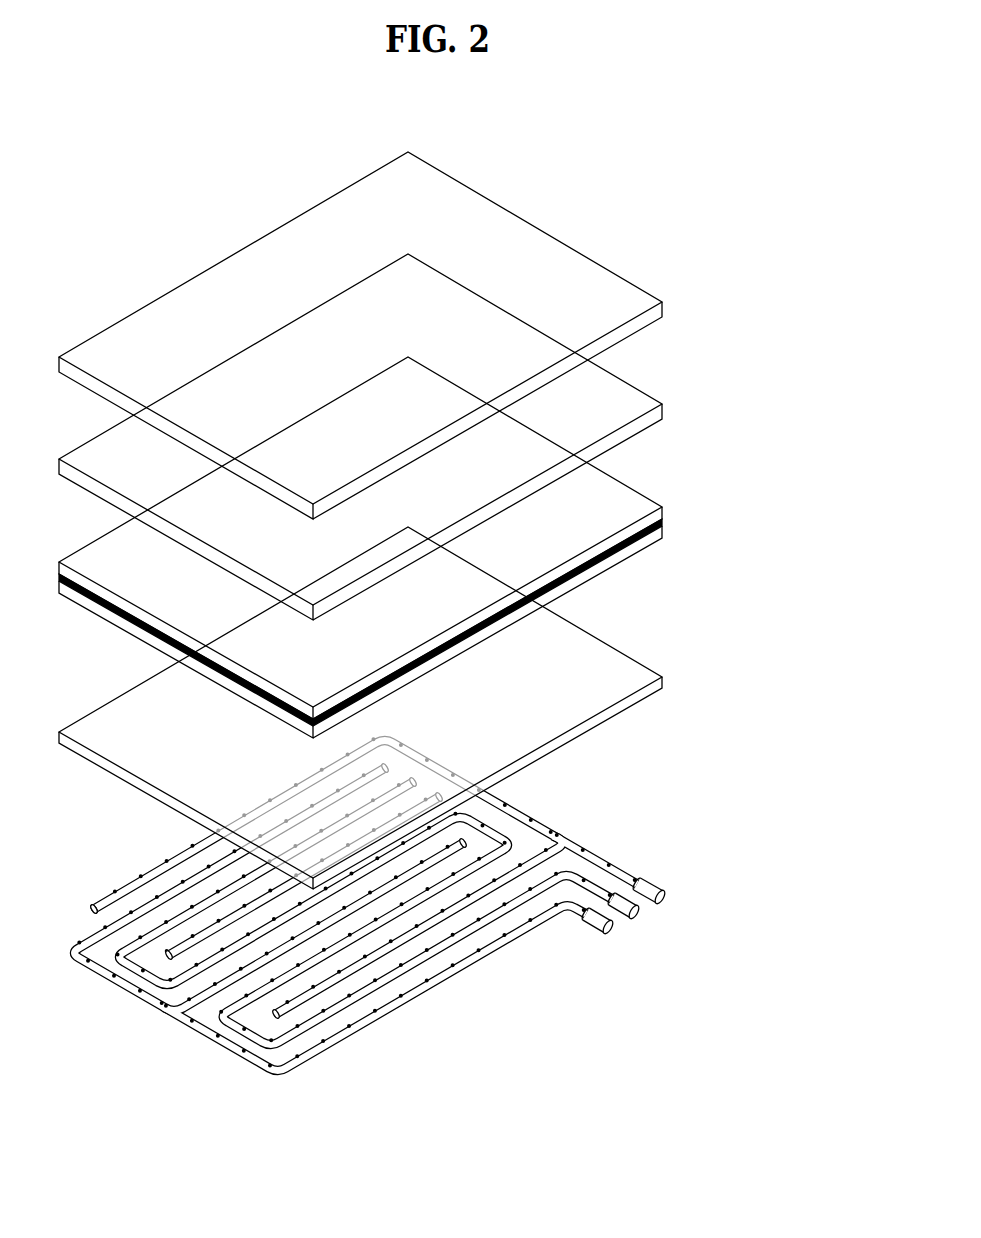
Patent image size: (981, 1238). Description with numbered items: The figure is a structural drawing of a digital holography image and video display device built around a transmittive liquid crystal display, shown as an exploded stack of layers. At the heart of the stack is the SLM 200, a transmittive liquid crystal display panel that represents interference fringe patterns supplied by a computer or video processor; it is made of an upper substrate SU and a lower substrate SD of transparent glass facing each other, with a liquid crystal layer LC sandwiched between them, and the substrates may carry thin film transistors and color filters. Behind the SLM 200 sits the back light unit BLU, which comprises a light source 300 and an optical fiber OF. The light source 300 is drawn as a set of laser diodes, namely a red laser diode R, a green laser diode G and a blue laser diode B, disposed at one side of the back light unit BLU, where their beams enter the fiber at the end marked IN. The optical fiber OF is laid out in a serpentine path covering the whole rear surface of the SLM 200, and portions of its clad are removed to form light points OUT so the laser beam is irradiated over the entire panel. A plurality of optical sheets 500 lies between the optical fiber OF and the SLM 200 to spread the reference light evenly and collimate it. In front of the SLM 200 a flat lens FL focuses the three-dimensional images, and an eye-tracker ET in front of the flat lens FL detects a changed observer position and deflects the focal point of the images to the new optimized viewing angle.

The eye-tracker ET is at (663, 310).
The flat lens FL is at (663, 412).
The SLM 200 is at (423, 547).
The upper substrate SU is at (663, 513).
The liquid crystal layer LC is at (663, 522).
The lower substrate SD is at (399, 632).
The optical sheets 500 is at (403, 708).
The back light unit BLU is at (436, 799).
The optical fiber OF is at (490, 957).
The light source 300 is at (670, 920).
The red laser diode R is at (665, 896).
The green laser diode G is at (640, 910).
The blue laser diode B is at (611, 935).
The light input end of optical fiber IN is at (650, 866).
The light points OUT is at (100, 897).